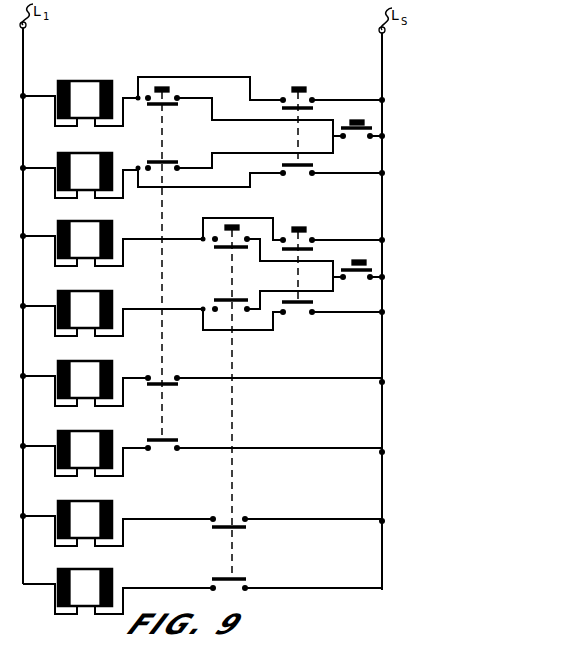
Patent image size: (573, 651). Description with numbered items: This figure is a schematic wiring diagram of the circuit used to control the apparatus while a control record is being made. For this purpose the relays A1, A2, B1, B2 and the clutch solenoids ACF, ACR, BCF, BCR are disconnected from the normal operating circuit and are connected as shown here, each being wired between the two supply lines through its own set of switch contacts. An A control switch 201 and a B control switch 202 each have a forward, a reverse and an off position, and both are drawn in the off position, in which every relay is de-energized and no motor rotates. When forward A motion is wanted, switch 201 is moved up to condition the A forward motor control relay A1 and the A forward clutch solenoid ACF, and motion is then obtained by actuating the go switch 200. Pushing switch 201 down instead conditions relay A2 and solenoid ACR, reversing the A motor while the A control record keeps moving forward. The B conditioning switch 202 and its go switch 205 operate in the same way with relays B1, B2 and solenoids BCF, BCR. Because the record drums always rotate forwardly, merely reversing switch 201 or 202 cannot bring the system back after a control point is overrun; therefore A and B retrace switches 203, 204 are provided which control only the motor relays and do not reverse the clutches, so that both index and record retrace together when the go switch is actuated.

The go switch 200 is at (364, 122).
The A control switch 201 is at (164, 88).
The B control switch 202 is at (234, 224).
The A retrace switch 203 is at (300, 89).
The B retrace switch 204 is at (300, 228).
The go switch 205 is at (364, 263).
The A forward motor control relay A1 is at (76, 90).
The A reverse motor control relay A2 is at (76, 162).
The B forward motor control relay B1 is at (74, 230).
The B reverse motor control relay B2 is at (76, 300).
The A forward clutch solenoid ACF is at (78, 370).
The A reverse clutch solenoid ACR is at (78, 440).
The B forward clutch solenoid BCF is at (78, 512).
The B reverse clutch solenoid BCR is at (78, 580).